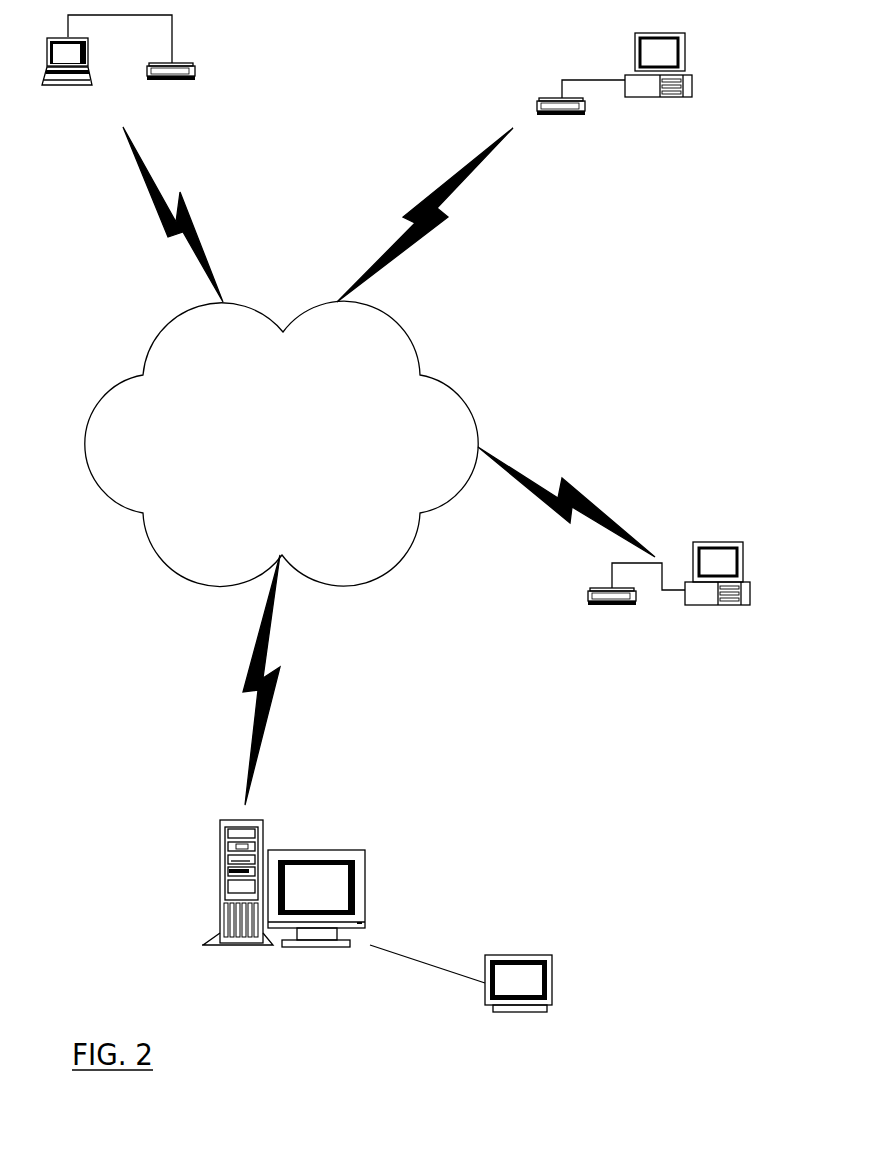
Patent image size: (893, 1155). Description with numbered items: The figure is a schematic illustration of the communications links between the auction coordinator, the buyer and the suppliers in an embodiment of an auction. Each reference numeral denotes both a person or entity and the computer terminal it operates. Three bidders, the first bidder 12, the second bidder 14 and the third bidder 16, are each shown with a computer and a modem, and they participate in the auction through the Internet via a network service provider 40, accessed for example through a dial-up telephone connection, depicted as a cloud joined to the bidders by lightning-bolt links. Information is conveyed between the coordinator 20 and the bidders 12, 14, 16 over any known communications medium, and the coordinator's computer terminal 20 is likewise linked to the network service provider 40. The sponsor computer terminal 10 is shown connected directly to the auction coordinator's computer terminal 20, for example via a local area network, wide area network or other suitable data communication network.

The sponsor computer terminal 10 is at (464, 1007).
The bidder-1 12 is at (117, 80).
The bidder-2 14 is at (612, 95).
The bidder-3 16 is at (668, 602).
The coordinator computer terminal 20 is at (283, 912).
The network service provider 40 is at (281, 443).